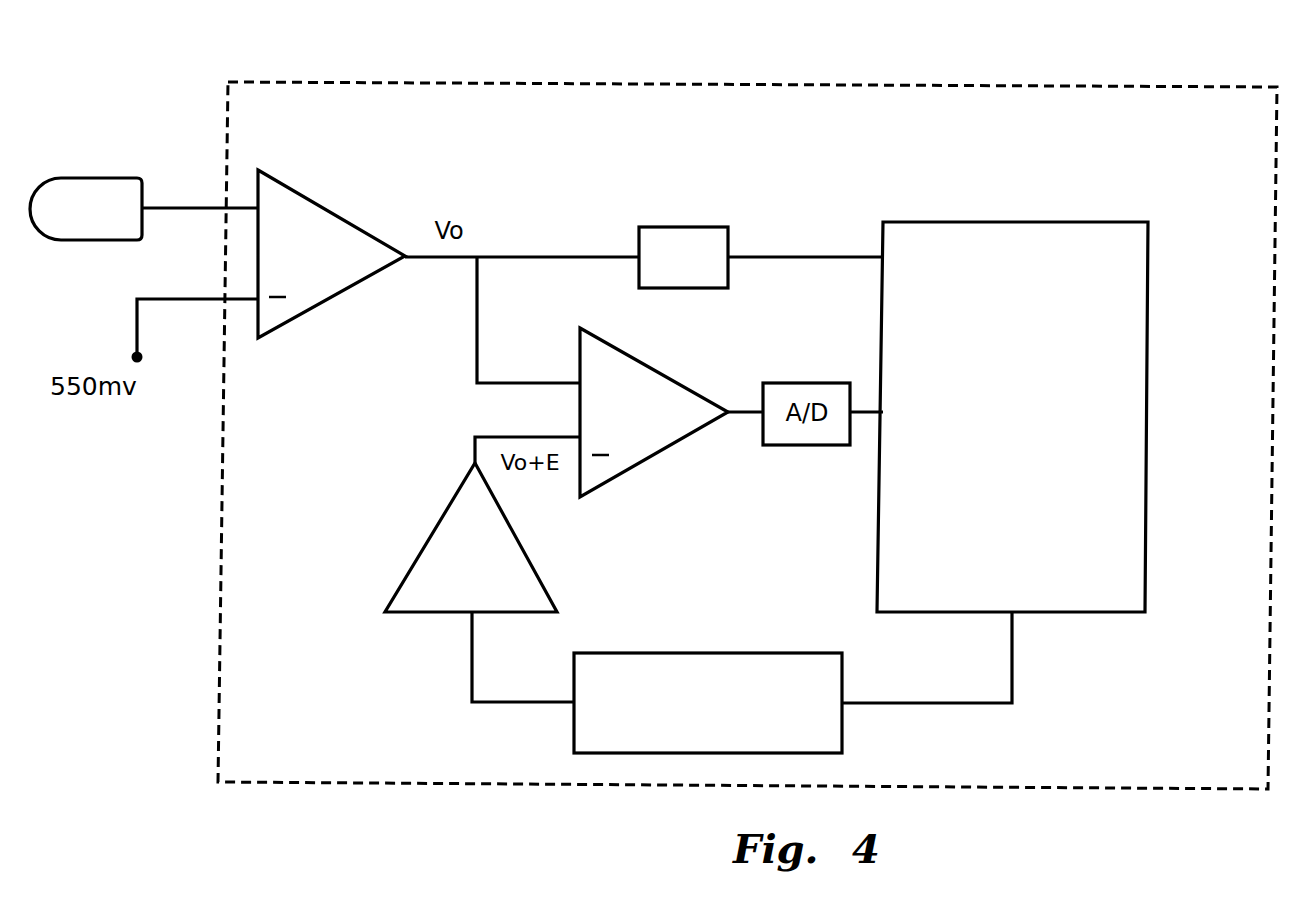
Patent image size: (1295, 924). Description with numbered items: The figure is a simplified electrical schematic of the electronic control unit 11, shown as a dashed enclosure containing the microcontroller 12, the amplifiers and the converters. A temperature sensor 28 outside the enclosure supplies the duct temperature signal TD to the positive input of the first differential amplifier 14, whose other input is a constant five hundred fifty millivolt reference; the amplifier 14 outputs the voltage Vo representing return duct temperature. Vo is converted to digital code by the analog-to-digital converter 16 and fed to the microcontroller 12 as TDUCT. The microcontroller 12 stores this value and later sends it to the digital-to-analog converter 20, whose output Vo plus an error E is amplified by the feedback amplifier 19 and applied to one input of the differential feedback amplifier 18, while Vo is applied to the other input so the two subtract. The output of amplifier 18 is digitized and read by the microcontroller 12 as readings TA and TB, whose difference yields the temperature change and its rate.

The electronic control unit 11 is at (998, 55).
The microcontroller 12 is at (1148, 319).
The first differential amplifier 14 is at (309, 199).
The analog-to-digital converter 16 is at (688, 227).
The differential feedback amplifier 18 is at (673, 444).
The feedback amplifier 19 is at (531, 565).
The digital-to-analog converter 20 is at (765, 653).
The temperature sensor 28 is at (122, 176).